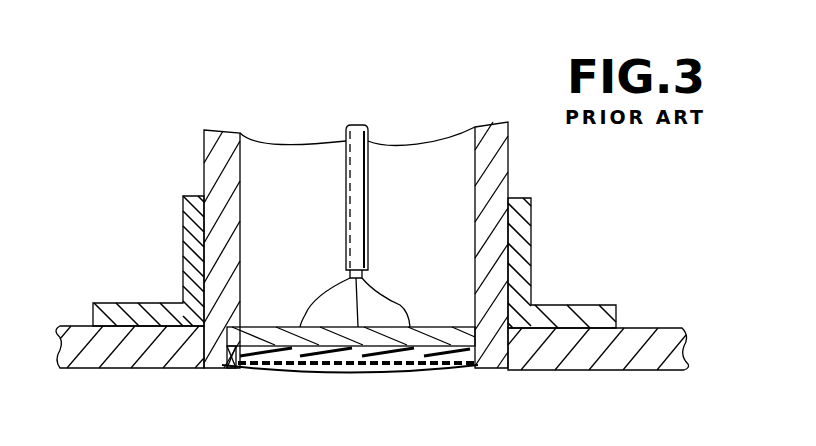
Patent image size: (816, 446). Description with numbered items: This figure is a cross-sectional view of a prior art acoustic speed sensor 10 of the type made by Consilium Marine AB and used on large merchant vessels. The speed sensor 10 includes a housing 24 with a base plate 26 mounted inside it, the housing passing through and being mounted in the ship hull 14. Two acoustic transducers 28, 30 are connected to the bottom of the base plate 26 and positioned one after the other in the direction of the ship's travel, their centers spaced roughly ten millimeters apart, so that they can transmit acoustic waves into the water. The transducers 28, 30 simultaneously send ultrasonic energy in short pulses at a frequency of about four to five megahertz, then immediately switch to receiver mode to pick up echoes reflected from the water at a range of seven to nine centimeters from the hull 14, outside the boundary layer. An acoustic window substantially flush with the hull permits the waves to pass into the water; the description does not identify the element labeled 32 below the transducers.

The speed sensor 10 is at (136, 228).
The ship hull 14 is at (660, 340).
The housing 24 is at (494, 178).
The base plate 26 is at (460, 327).
The acoustic transducer 28 is at (247, 372).
The acoustic transducer 30 is at (443, 372).
The insulating layer 32 is at (303, 372).